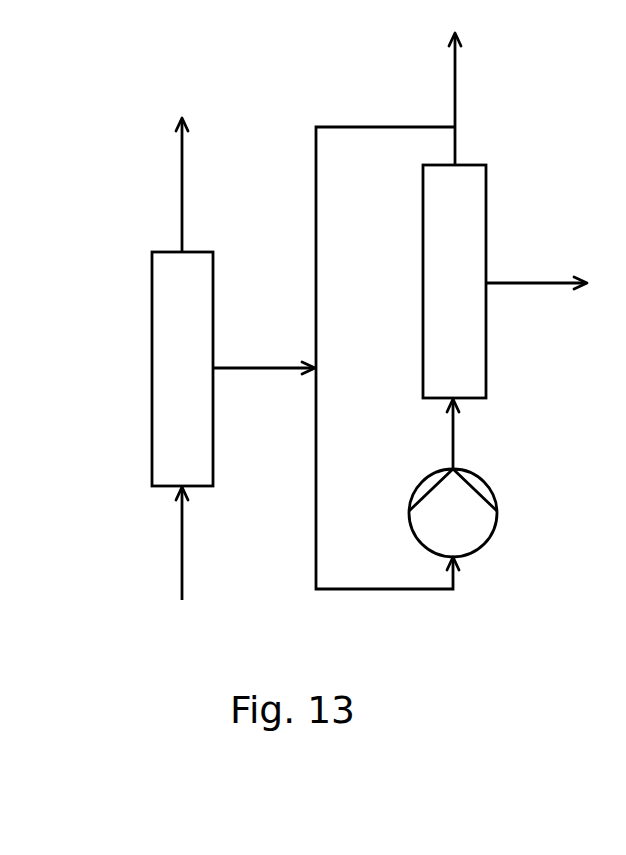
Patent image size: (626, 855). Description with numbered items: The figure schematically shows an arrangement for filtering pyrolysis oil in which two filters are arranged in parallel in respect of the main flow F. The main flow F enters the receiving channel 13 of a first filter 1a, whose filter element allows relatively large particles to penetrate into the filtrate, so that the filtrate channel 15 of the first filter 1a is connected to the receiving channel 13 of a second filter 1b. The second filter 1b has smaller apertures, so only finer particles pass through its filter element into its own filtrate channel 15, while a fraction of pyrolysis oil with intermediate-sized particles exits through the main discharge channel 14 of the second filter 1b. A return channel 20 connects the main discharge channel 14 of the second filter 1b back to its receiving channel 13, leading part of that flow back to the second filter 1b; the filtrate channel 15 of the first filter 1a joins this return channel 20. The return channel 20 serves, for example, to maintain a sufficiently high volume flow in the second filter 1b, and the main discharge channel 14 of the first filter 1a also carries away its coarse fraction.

The first filter 1a is at (168, 381).
The second filter 1b is at (478, 358).
The receiving channel 13 is at (185, 512).
The main discharge channel 14 is at (181, 188).
The filtrate channel 15 is at (246, 365).
The return channel 20 is at (315, 477).
The main flow F is at (152, 552).